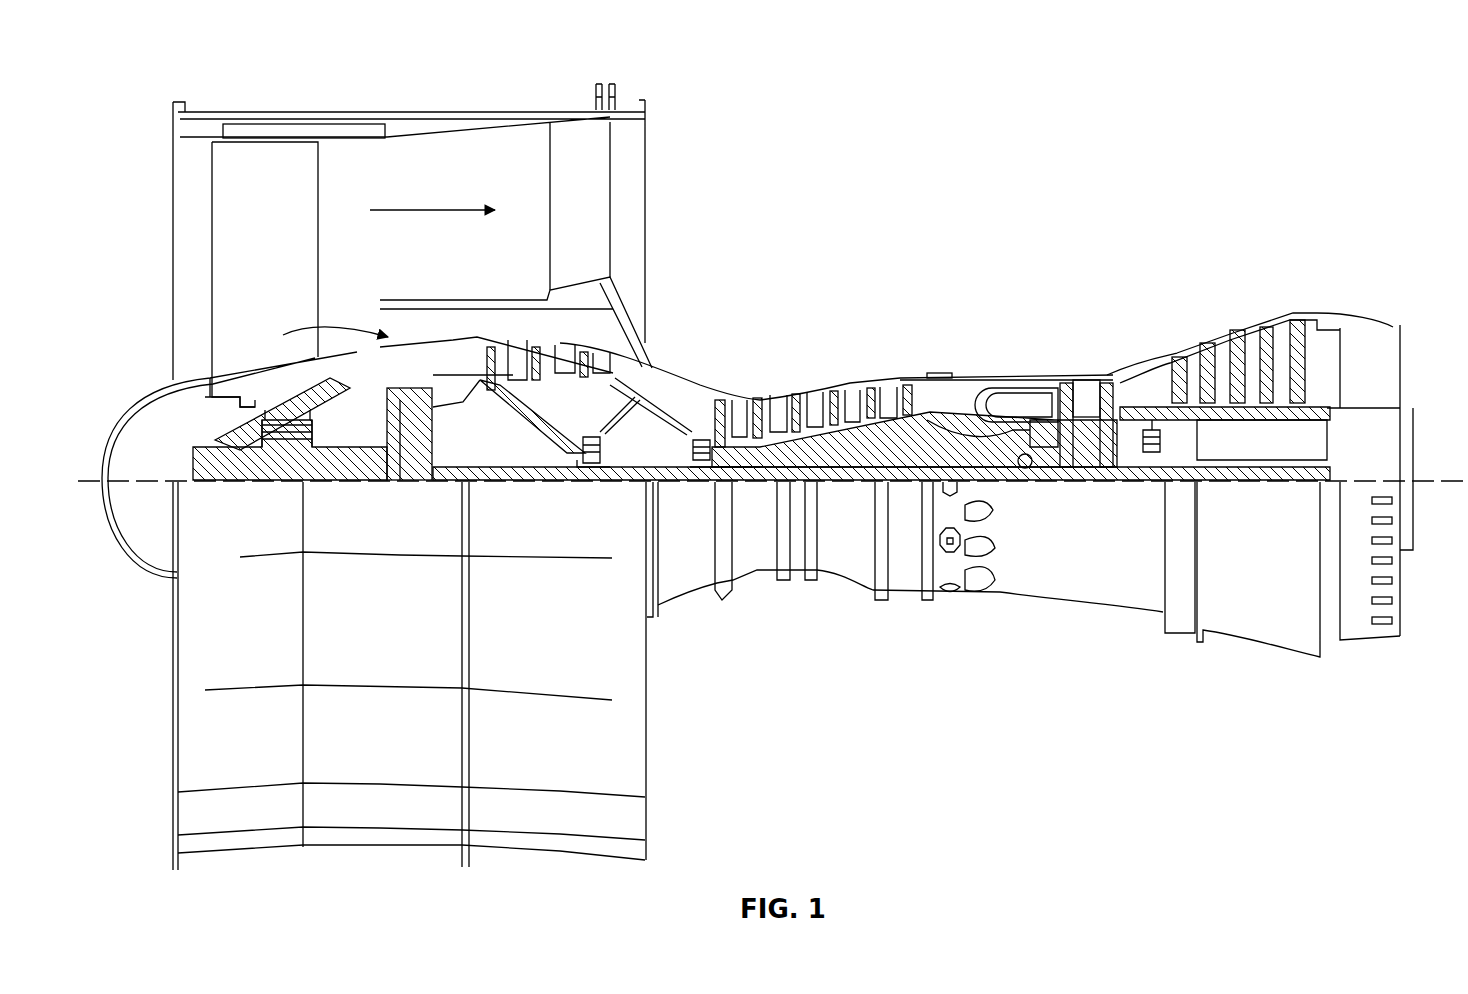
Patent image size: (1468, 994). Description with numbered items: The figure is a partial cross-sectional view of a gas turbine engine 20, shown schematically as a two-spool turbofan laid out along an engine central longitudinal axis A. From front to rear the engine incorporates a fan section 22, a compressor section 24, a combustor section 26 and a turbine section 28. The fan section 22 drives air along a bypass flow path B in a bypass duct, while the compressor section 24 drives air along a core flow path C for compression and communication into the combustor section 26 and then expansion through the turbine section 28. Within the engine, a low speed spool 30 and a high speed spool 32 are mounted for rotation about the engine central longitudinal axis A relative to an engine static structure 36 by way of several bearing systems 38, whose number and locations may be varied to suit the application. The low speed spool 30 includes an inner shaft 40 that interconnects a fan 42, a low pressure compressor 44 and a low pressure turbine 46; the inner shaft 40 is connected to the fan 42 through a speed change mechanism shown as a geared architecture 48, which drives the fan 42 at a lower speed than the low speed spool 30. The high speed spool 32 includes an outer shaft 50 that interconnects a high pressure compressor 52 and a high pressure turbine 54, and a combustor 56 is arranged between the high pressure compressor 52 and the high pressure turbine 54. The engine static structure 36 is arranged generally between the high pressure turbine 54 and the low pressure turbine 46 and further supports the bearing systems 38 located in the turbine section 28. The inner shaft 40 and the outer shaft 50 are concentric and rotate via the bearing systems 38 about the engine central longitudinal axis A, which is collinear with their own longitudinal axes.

The gas turbine engine 20 is at (1296, 162).
The fan section 22 is at (282, 100).
The compressor section 24 is at (843, 322).
The combustor section 26 is at (1000, 332).
The turbine section 28 is at (1210, 293).
The low speed spool 30 is at (872, 486).
The high speed spool 32 is at (930, 430).
The engine static structure 36 is at (908, 597).
The bearing systems 38 is at (275, 450).
The inner shaft 40 is at (660, 482).
The fan 42 is at (291, 240).
The low pressure compressor 44 is at (560, 345).
The low pressure turbine 46 is at (1255, 335).
The geared architecture 48 is at (410, 455).
The outer shaft 50 is at (1033, 470).
The high pressure compressor 52 is at (826, 447).
The high pressure turbine 54 is at (1077, 378).
The combustor 56 is at (1012, 400).
The engine central longitudinal axis A is at (1428, 472).
The bypass flow path B is at (437, 210).
The core flow path C is at (300, 332).